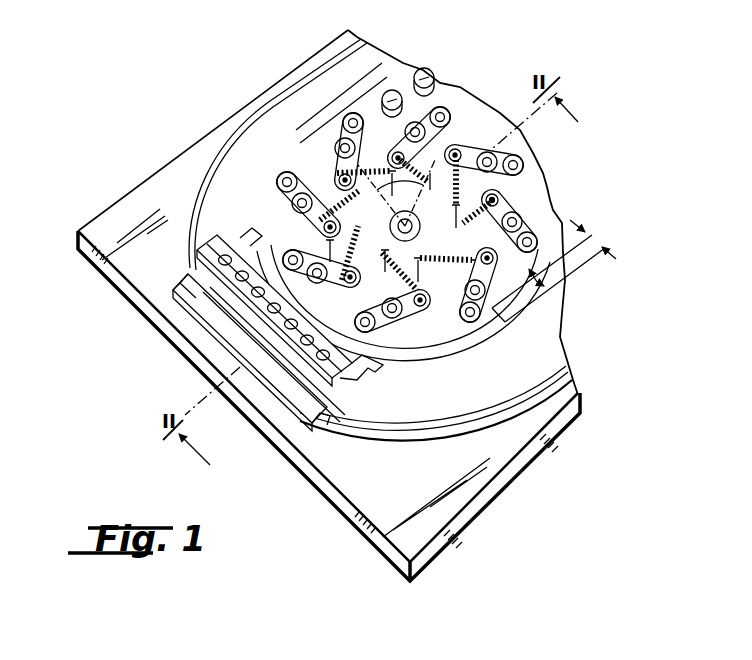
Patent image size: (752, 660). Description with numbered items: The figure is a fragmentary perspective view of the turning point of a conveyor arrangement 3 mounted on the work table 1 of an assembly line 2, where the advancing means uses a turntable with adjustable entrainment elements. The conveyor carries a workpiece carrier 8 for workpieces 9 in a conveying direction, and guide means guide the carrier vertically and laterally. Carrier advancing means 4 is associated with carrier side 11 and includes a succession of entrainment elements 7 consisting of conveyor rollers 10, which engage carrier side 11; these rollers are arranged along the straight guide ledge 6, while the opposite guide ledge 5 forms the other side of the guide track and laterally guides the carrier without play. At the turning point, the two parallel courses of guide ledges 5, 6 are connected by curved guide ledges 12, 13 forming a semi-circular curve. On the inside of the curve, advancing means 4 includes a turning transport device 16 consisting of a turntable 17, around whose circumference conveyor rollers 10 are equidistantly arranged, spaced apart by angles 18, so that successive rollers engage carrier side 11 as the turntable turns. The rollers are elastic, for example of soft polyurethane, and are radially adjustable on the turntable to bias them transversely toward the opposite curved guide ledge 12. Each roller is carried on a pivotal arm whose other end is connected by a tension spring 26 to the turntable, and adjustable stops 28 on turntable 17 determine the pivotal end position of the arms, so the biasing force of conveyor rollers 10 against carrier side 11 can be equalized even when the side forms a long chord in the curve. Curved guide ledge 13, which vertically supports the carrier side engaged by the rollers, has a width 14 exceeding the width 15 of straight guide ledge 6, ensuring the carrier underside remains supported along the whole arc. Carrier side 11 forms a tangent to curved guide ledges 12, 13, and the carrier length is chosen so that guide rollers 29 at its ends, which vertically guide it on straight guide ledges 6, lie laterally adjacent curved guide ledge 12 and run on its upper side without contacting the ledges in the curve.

The work table 1 is at (118, 194).
The assembly line 2 is at (283, 66).
The conveyor arrangement 3 is at (435, 61).
The carrier advancing means 4 is at (463, 112).
The guide ledge 5 is at (337, 64).
The guide ledge 6 is at (391, 87).
The entrainment elements 7 is at (423, 67).
The workpiece carrier 8 is at (196, 300).
The workpieces 9 is at (282, 312).
The conveyor rollers 10 is at (349, 116).
The carrier side 11 is at (387, 345).
The curved guide ledge 12 is at (197, 221).
The curved guide ledge 13 is at (435, 344).
The width 14 is at (545, 283).
The width 15 is at (592, 232).
The turning transport device 16 is at (500, 188).
The turntable 17 is at (496, 201).
The angles 18 is at (410, 151).
The tension springs 26 is at (425, 275).
The adjustable stops 28 is at (322, 178).
The guide rollers 29 is at (330, 425).